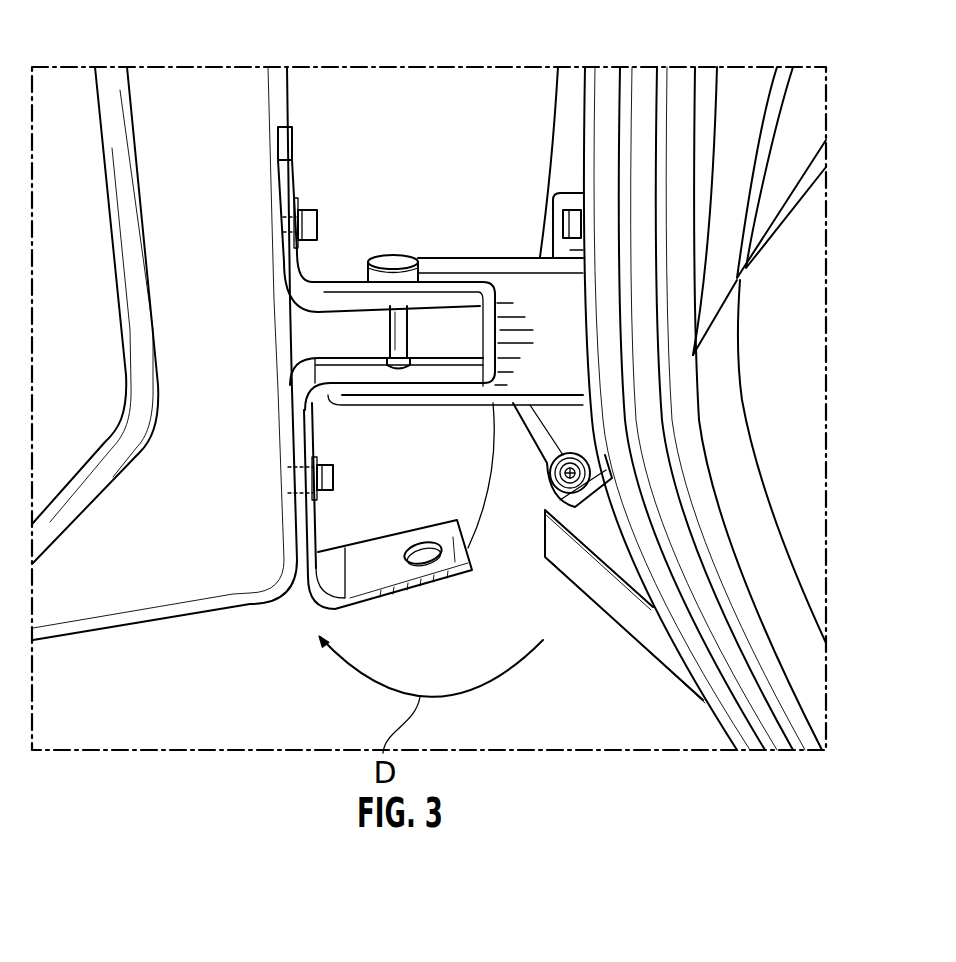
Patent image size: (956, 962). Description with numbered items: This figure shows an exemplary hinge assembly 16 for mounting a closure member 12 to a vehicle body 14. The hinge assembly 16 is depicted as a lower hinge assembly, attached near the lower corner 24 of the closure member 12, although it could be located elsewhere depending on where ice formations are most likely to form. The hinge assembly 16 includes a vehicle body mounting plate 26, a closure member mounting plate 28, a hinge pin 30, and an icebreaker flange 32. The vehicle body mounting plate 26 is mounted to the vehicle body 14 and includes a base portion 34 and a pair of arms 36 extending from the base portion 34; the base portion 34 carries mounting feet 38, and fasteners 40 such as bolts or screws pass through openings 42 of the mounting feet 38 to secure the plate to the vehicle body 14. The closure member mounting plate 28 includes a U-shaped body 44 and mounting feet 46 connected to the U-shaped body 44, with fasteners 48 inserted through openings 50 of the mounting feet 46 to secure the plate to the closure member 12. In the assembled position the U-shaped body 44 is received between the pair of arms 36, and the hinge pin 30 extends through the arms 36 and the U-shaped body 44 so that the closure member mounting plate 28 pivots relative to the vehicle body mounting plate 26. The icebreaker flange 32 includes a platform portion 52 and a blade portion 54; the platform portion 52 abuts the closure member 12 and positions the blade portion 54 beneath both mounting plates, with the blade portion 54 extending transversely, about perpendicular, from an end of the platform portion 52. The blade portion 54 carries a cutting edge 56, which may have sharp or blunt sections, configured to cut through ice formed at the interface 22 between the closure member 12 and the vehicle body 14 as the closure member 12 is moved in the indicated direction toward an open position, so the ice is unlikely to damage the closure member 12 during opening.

The closure member 12 is at (173, 82).
The vehicle body 14 is at (738, 77).
The hinge assembly 16 is at (392, 232).
The interface 22 is at (535, 532).
The lower corner 24 is at (277, 608).
The vehicle body mounting plate 26 is at (546, 250).
The closure member mounting plate 28 is at (318, 270).
The hinge pin 30 is at (407, 342).
The icebreaker flange 32 is at (308, 588).
The base portion 34 is at (543, 367).
The pair of arms 36 is at (472, 270).
The mounting feet 38 is at (570, 250).
The fasteners 40 is at (570, 208).
The openings 42 is at (573, 198).
The U-shaped body 44 is at (333, 287).
The mounting feet 46 is at (282, 262).
The fasteners 48 is at (308, 210).
The openings 50 is at (292, 230).
The platform portion 52 is at (316, 526).
The blade portion 54 is at (400, 560).
The cutting edge 56 is at (390, 537).